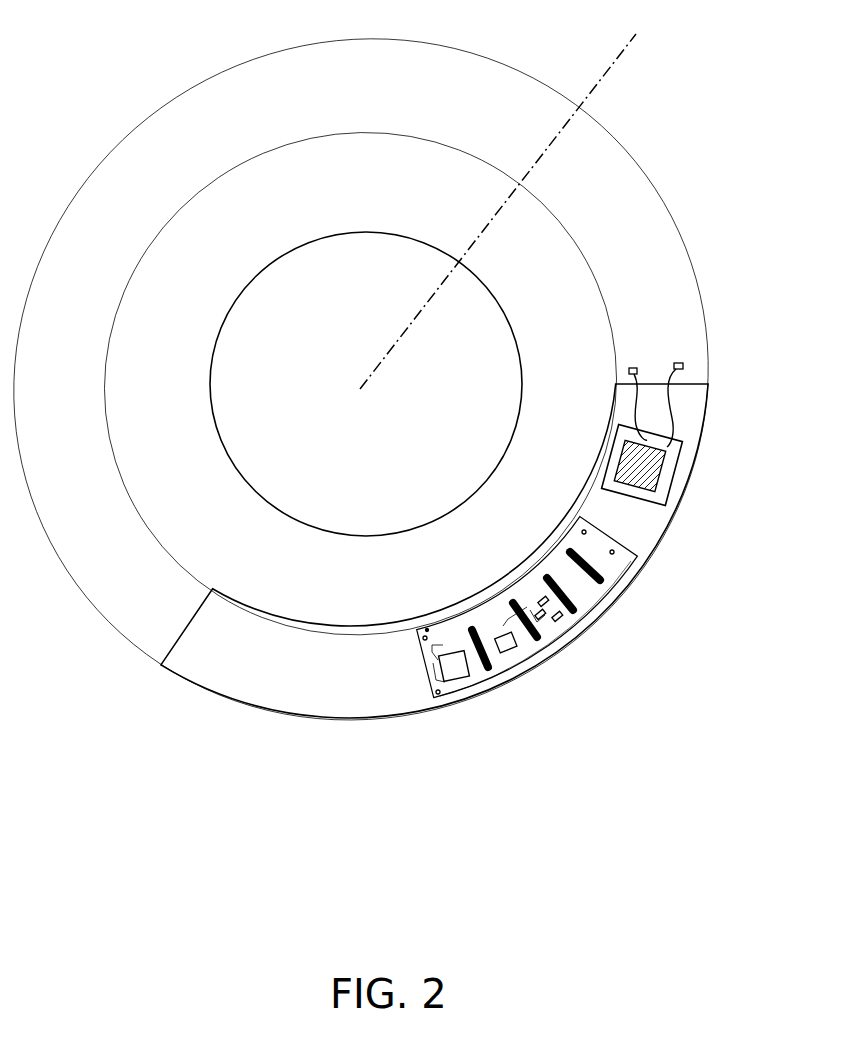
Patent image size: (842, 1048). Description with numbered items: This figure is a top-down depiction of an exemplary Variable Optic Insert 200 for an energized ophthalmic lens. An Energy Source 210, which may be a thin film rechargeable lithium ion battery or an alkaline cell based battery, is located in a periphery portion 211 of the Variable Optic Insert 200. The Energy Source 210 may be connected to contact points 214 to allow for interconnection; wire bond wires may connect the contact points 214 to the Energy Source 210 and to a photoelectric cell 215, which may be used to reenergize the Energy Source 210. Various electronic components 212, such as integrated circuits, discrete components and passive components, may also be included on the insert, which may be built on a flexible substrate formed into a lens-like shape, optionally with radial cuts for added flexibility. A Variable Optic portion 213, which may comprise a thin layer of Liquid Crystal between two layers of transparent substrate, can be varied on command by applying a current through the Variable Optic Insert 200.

The Variable Optic Insert 200 is at (136, 138).
The Energy Source 210 is at (663, 467).
The periphery portion 211 is at (434, 481).
The electronic components 212 is at (555, 658).
The Variable Optic portion 213 is at (525, 205).
The contact points 214 is at (656, 394).
The photoelectric cell 215 is at (460, 678).